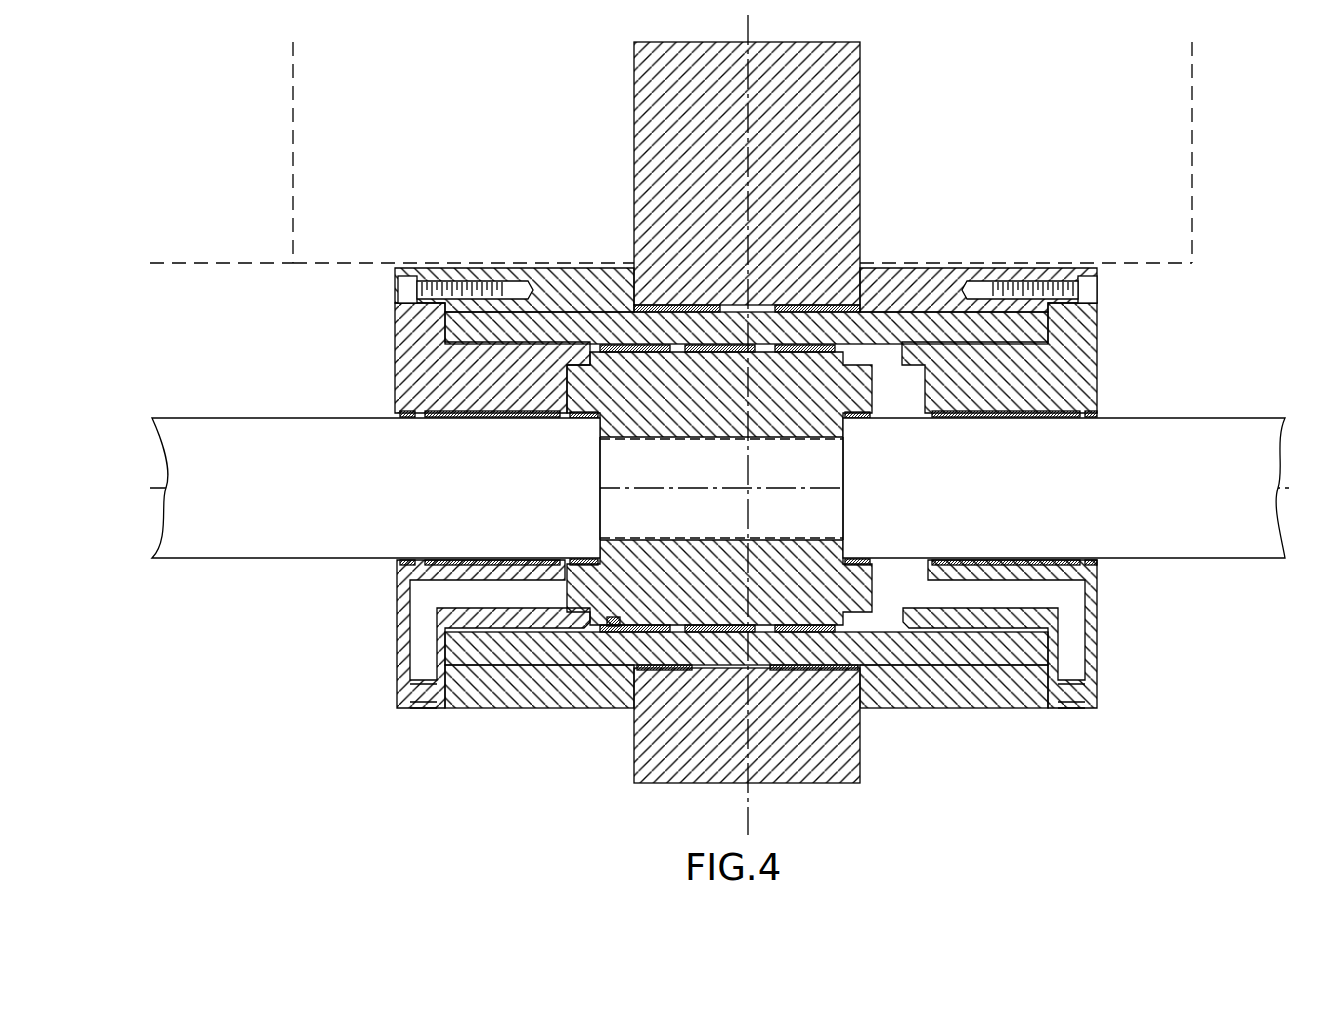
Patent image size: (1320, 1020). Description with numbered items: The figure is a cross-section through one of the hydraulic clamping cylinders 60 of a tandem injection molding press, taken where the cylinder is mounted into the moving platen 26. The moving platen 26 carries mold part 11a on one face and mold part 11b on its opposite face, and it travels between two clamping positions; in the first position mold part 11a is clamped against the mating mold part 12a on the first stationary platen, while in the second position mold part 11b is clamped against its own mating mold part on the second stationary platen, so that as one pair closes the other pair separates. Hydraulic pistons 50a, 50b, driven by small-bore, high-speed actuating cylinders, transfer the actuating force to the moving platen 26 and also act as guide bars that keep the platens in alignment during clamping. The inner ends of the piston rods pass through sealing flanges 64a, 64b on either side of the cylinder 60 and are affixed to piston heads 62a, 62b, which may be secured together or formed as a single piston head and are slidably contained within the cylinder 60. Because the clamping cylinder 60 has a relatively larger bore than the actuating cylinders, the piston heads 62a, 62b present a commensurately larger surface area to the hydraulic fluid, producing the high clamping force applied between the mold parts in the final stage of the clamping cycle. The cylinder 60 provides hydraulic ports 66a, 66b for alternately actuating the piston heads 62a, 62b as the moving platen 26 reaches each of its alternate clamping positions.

The mold part 11a is at (450, 135).
The mold part 11b is at (1050, 135).
The mold part 12a is at (183, 135).
The moving platen 26 is at (803, 772).
The hydraulic piston 50a is at (322, 558).
The hydraulic piston 50b is at (1212, 558).
The hydraulic clamping cylinder 60 is at (890, 655).
The piston head 62a is at (683, 425).
The piston head 62b is at (707, 546).
The sealing flange 64a is at (395, 358).
The sealing flange 64b is at (1098, 362).
The hydraulic port 66a is at (422, 708).
The hydraulic port 66b is at (1072, 708).